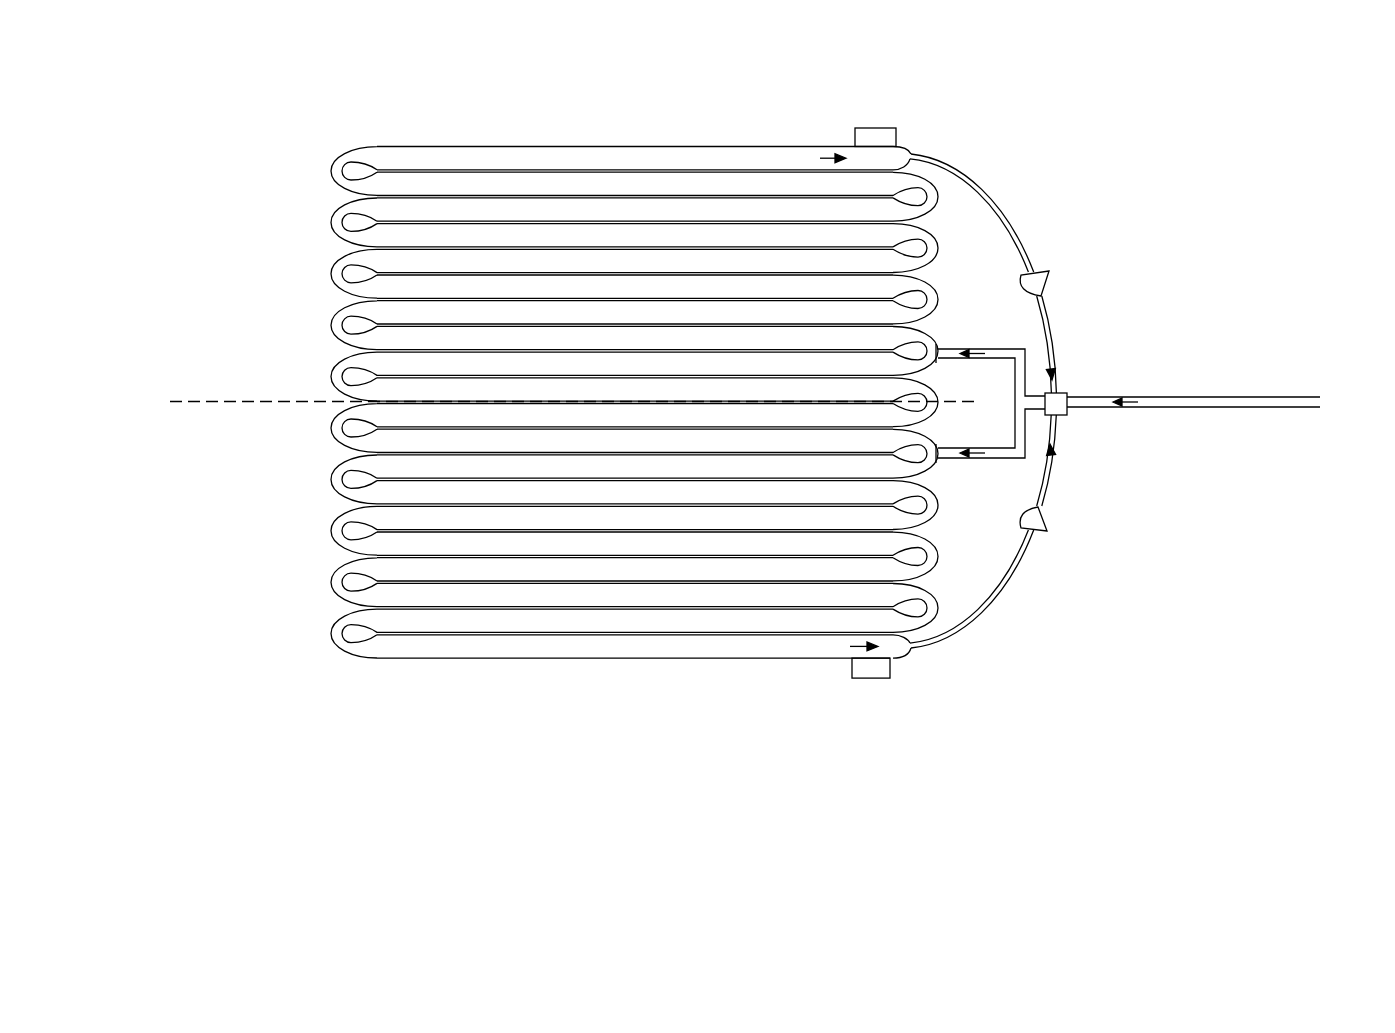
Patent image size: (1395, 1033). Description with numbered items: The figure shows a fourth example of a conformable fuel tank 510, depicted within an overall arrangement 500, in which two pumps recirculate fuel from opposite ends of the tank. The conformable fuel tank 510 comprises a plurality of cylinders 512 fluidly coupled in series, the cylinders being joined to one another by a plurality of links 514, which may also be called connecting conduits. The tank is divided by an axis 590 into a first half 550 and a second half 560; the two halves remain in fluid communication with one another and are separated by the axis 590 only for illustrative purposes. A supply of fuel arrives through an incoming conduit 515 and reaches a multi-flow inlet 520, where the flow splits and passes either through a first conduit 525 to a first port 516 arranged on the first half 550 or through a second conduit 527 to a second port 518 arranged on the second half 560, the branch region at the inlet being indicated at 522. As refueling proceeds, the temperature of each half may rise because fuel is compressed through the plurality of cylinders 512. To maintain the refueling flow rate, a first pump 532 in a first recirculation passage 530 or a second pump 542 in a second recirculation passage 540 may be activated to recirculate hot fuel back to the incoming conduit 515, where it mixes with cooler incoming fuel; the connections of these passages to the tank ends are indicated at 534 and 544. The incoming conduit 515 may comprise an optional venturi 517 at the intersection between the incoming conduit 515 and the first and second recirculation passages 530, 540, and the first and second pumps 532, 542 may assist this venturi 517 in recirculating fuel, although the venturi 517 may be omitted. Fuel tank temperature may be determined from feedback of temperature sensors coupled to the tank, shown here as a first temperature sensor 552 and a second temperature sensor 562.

The cooling system 500 is at (1274, 34).
The conformable fuel tank 510 is at (1236, 91).
The plurality of cylinders 512 is at (447, 146).
The links 514 is at (333, 214).
The incoming conduit 515 is at (1278, 398).
The first port 516 is at (937, 465).
The venturi 517 is at (1068, 412).
The second port 518 is at (939, 347).
The multi-flow inlet 520 is at (1075, 370).
The tee connector 522 is at (1045, 393).
The first conduit 525 is at (1025, 462).
The second conduit 527 is at (998, 342).
The first recirculation passage 530 is at (1010, 590).
The first pump 532 is at (1050, 528).
The second return line end 534 is at (912, 653).
The second recirculation passage 540 is at (1018, 227).
The second pump 542 is at (1050, 278).
The first return line end 544 is at (912, 152).
The first half 550 is at (215, 545).
The first temperature sensor 552 is at (868, 680).
The second half 560 is at (170, 195).
The second temperature sensor 562 is at (889, 127).
The axis 590 is at (178, 402).